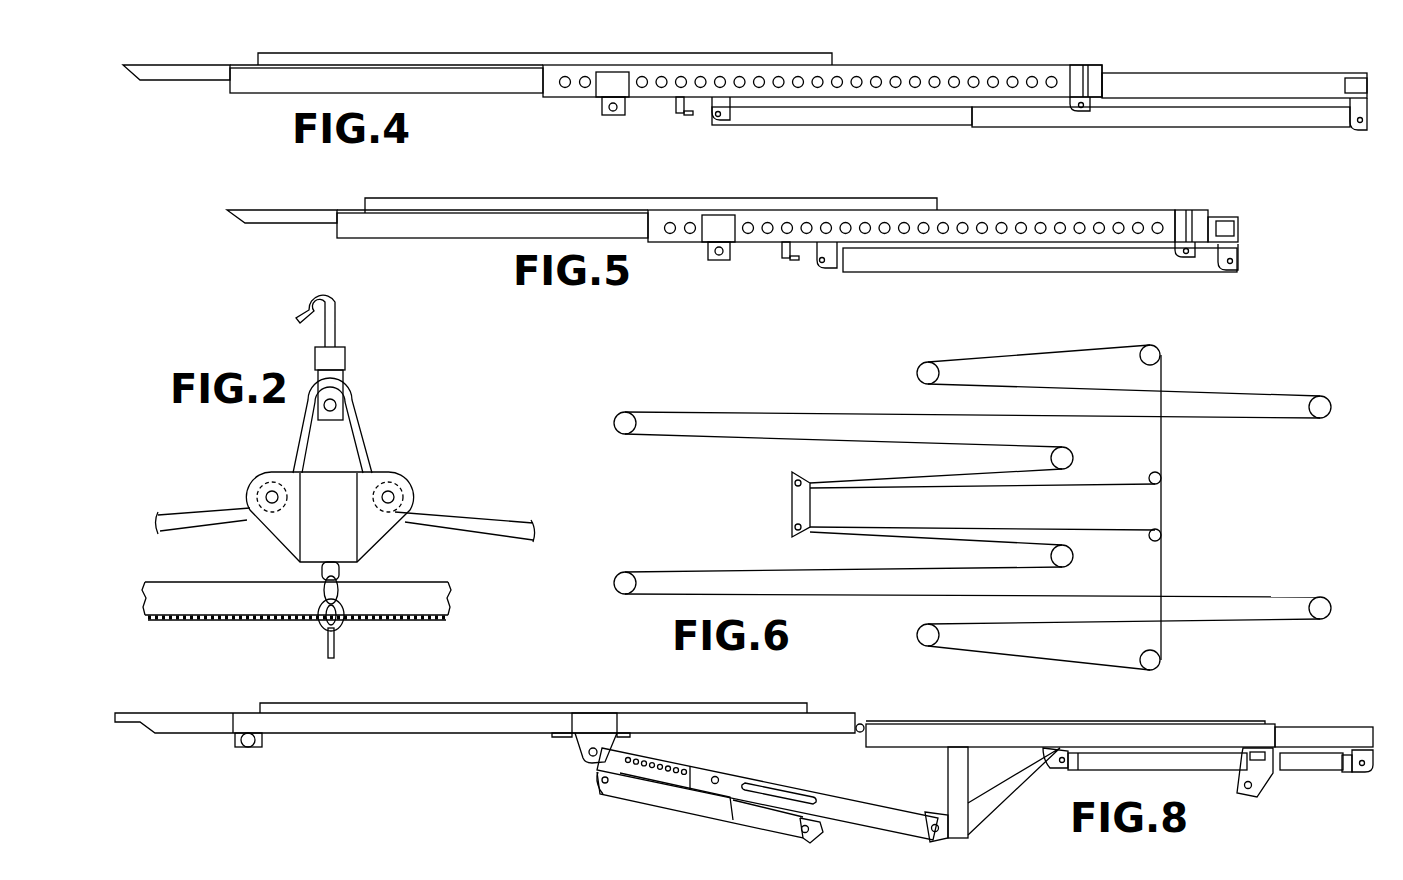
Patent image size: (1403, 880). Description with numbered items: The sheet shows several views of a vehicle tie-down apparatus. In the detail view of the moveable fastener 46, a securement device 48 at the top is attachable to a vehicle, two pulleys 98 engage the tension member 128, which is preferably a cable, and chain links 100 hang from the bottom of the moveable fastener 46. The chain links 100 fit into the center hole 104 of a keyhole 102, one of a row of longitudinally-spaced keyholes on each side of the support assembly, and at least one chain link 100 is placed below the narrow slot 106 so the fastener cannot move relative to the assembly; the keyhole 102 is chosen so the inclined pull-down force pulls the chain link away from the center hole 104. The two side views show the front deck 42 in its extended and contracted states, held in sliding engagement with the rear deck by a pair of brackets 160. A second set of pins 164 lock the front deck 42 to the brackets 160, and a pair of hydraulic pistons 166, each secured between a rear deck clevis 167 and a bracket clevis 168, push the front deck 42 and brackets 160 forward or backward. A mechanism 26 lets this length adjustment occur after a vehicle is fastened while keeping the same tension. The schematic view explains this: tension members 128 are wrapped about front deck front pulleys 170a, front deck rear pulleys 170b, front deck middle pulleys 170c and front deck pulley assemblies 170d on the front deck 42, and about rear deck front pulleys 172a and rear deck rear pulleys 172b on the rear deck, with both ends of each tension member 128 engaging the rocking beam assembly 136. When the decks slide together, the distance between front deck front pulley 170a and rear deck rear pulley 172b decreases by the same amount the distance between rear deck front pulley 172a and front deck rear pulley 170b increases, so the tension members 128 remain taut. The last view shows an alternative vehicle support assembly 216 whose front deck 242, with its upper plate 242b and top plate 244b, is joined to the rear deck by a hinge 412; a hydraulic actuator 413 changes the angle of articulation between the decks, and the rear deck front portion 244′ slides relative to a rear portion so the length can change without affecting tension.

In FIG. 4, the mechanism 26 is at (1055, 54).
In FIG. 5, the mechanism 26 is at (843, 182).
In FIG. 4, the front deck 42 is at (469, 85).
In FIG. 5, the front deck 42 is at (447, 228).
In FIG. 4, the brackets 160 is at (987, 77).
In FIG. 5, the brackets 160 is at (1055, 220).
In FIG. 4, the second set of pins 164 is at (676, 110).
In FIG. 5, the second set of pins 164 is at (782, 255).
In FIG. 4, the bracket clevis 168 is at (707, 108).
In FIG. 5, the bracket clevis 168 is at (813, 253).
In FIG. 4, the hydraulic pistons 166 is at (1245, 118).
In FIG. 5, the hydraulic pistons 166 is at (1120, 258).
In FIG. 4, the rear deck clevis 167 is at (1350, 128).
In FIG. 5, the rear deck clevis 167 is at (1238, 254).
In FIG. 2, the securement device 48 is at (337, 317).
In FIG. 2, the moveable fastener 46 is at (458, 425).
In FIG. 2, the pulleys 98 is at (247, 482).
In FIG. 2, the tension member 128 is at (506, 520).
In FIG. 6, the tension member 128 is at (743, 410).
In FIG. 2, the keyhole 102 is at (403, 576).
In FIG. 2, the narrow slot 106 is at (188, 618).
In FIG. 2, the chain links 100 is at (328, 647).
In FIG. 2, the center hole 104 is at (360, 623).
In FIG. 6, the front deck front pulleys 170a is at (624, 416).
In FIG. 6, the rear deck front pulleys 172a is at (917, 373).
In FIG. 6, the front deck rear pulleys 170b is at (1160, 350).
In FIG. 6, the rear deck rear pulleys 172b is at (1320, 418).
In FIG. 6, the front deck middle pulleys 170c is at (1112, 450).
In FIG. 6, the front deck pulley assemblies 170d is at (1162, 478).
In FIG. 6, the rocking beam assembly 136 is at (792, 502).
In FIG. 8, the vehicle support assembly 216 is at (479, 800).
In FIG. 8, the front deck 242 is at (521, 694).
In FIG. 8, the upper plate 242b is at (655, 712).
In FIG. 8, the hinge 412 is at (860, 722).
In FIG. 8, the hydraulic actuator 413 is at (667, 805).
In FIG. 8, the rear deck front portion 244′ is at (1145, 712).
In FIG. 8, the top plate 244b is at (975, 719).